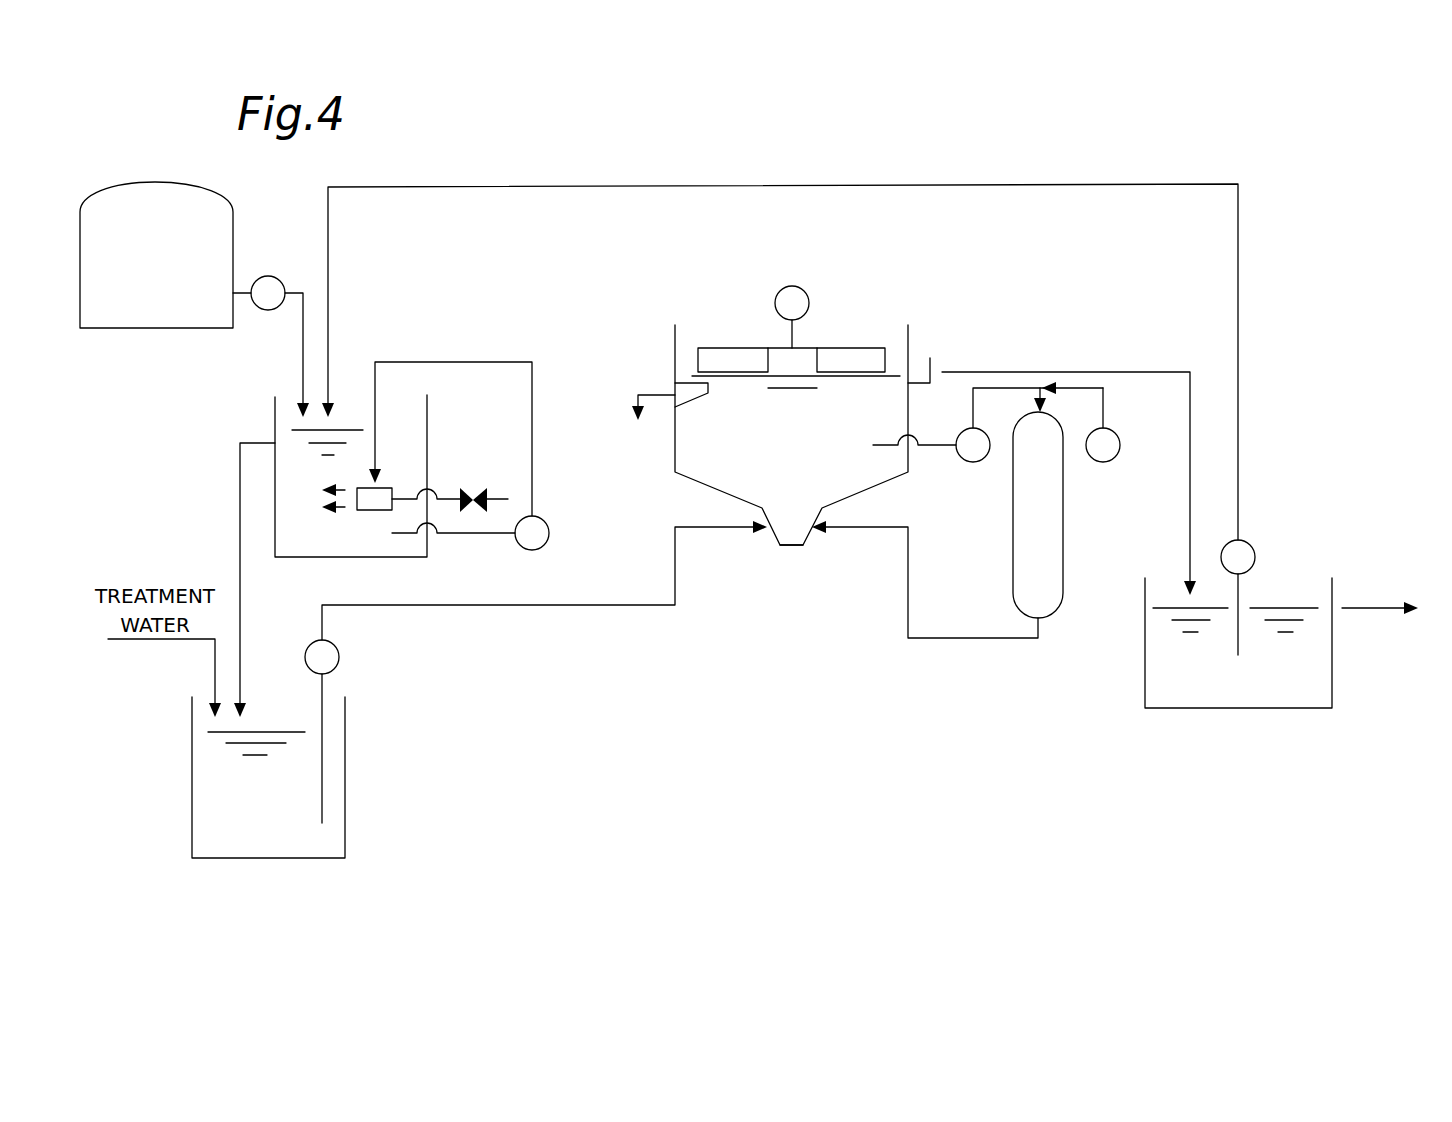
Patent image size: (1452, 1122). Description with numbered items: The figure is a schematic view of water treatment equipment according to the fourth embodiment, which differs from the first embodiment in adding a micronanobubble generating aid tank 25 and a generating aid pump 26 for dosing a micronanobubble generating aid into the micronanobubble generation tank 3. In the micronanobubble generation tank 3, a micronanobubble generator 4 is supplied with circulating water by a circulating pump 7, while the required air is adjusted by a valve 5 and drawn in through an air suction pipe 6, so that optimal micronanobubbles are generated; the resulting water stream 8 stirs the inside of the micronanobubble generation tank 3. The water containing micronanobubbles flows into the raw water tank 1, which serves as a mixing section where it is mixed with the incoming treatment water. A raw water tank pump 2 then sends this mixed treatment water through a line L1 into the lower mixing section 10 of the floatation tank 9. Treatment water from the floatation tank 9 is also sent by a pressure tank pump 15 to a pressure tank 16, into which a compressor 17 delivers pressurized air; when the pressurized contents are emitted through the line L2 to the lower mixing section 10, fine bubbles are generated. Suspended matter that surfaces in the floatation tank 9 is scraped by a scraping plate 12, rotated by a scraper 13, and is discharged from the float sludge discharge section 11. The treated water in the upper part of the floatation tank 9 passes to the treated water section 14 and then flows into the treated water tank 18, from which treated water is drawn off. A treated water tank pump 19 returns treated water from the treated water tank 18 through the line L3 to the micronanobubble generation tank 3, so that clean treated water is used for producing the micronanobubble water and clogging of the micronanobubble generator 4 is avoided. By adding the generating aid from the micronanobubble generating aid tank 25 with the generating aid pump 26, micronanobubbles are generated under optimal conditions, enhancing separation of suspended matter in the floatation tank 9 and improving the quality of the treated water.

The raw water tank 1 is at (192, 765).
The raw water tank pump 2 is at (339, 657).
The micronanobubble generation tank 3 is at (260, 394).
The micronanobubble generator 4 is at (375, 512).
The valve 5 is at (462, 488).
The air suction pipe 6 is at (503, 496).
The circulating pump 7 is at (549, 533).
The water stream 8 is at (340, 512).
The floatation tank 9 is at (660, 368).
The lower mixing section 10 is at (808, 548).
The float sludge discharge section 11 is at (690, 380).
The scraping plate 12 is at (733, 355).
The scraper 13 is at (792, 286).
The treated water section 14 is at (930, 358).
The pressure tank pump 15 is at (973, 462).
The pressure tank 16 is at (1013, 580).
The compressor 17 is at (1103, 462).
The treated water tank 18 is at (1145, 632).
The treated water tank pump 19 is at (1252, 545).
The micronanobubble generating aid tank 25 is at (155, 328).
The generating aid pump 26 is at (268, 276).
The line L1 is at (552, 605).
The line L2 is at (965, 638).
The line L3 is at (1098, 183).